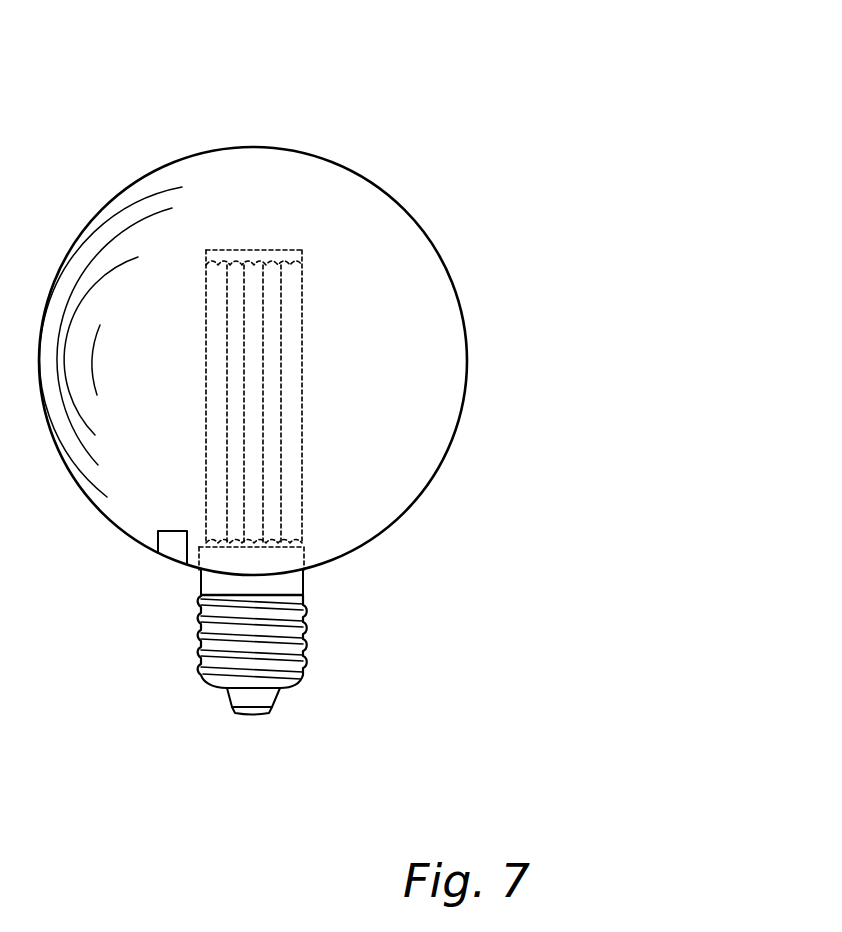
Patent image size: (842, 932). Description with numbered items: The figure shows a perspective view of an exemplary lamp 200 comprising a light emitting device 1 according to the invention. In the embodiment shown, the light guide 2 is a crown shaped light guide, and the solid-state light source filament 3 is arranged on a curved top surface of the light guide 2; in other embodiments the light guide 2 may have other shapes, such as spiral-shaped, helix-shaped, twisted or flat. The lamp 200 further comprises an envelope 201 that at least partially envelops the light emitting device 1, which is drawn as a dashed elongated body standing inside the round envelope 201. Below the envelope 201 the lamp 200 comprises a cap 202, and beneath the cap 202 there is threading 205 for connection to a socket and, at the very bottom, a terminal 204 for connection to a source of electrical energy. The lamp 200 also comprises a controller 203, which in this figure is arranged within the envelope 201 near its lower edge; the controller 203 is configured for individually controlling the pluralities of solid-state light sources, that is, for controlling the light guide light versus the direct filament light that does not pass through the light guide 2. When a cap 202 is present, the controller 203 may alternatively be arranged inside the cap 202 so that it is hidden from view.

The lamp 200 is at (394, 133).
The light emitting device 1 is at (310, 243).
The light guide 2 is at (302, 418).
The solid-state light source filament 3 is at (248, 247).
The envelope 201 is at (448, 265).
The cap 202 is at (303, 582).
The controller 203 is at (173, 548).
The terminal 204 is at (250, 713).
The threading 205 is at (205, 668).